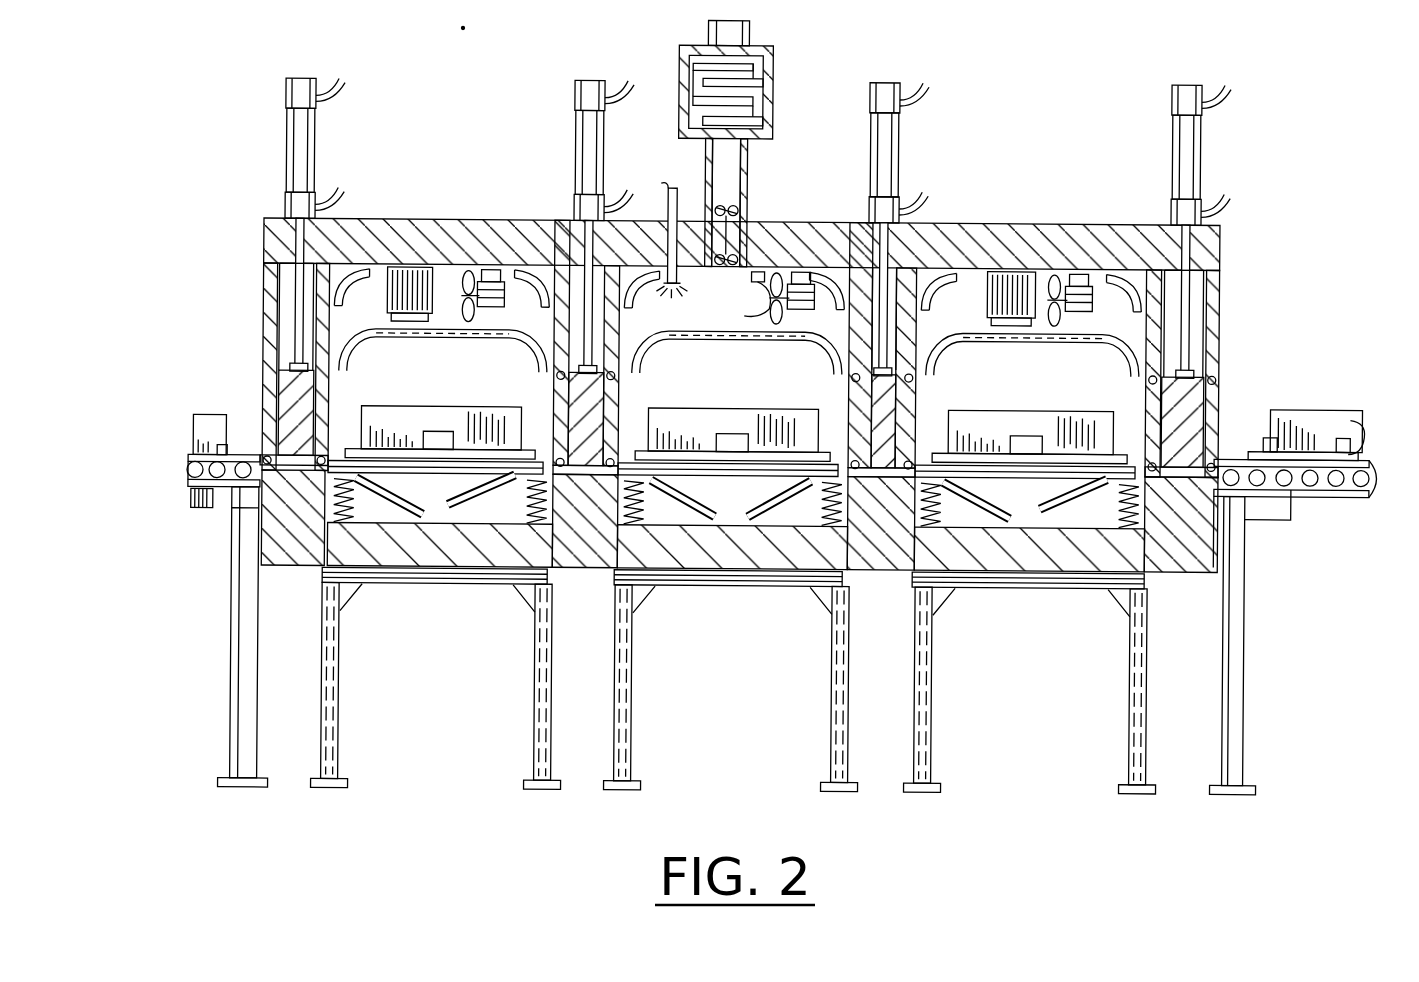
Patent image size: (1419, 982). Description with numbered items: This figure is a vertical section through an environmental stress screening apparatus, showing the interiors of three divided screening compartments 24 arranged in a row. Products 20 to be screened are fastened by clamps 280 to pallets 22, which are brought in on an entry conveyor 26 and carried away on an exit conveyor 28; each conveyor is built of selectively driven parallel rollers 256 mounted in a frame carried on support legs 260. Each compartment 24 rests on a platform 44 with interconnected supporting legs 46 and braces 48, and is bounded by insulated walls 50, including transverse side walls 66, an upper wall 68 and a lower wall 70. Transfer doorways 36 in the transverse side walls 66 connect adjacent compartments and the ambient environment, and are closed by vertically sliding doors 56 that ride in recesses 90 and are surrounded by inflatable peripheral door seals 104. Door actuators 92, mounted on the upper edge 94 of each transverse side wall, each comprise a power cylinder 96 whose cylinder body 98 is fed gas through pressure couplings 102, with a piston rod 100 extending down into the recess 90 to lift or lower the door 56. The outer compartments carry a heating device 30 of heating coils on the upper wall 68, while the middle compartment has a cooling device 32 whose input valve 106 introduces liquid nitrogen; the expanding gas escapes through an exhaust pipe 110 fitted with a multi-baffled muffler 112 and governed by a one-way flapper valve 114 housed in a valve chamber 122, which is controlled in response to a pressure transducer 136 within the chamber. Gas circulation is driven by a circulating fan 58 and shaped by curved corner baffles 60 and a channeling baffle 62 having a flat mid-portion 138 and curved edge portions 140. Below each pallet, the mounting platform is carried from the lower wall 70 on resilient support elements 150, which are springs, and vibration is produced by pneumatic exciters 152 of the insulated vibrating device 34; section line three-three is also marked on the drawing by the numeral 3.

The section line 3- 3 is at (725, 202).
The product 20 is at (404, 402).
The pallet 22 is at (492, 438).
The divided screening compartment 24 is at (419, 369).
The entry conveyor 26 is at (1370, 500).
The exit conveyor 28 is at (193, 448).
The heating device 30 is at (440, 285).
The cooling device 32 is at (664, 185).
The vibrating device 34 is at (438, 573).
The transfer doorway 36 is at (280, 382).
The platform 44 is at (1075, 595).
The supporting leg 46 is at (933, 735).
The brace 48 is at (949, 603).
The insulated wall 50 is at (1227, 243).
The sliding door 56 is at (281, 414).
The circulating fan 58 is at (1057, 275).
The corner baffle 60 is at (353, 327).
The channeling baffle 62 is at (386, 262).
The transverse side wall 66 is at (266, 322).
The upper wall 68 is at (930, 262).
The lower wall 70 is at (737, 585).
The recess 90 is at (300, 275).
The door actuator 92 is at (761, 136).
The upper edge 94 is at (266, 218).
The power cylinder 96 is at (1206, 139).
The cylinder body 98 is at (1206, 188).
The piston rod 100 is at (302, 318).
The pressure coupling 102 is at (1208, 88).
The peripheral door seal 104 is at (310, 478).
The input valve 106 is at (668, 235).
The exhaust pipe 110 is at (748, 28).
The multi-baffled muffler 112 is at (773, 80).
The one-way flapper valve 114 is at (704, 255).
The valve chamber 122 is at (745, 228).
The pressure transducer 136 is at (760, 283).
The flat mid-portion 138 is at (449, 327).
The curved edge portion 140 is at (545, 345).
The resilient support element 150 is at (505, 512).
The exciter 152 is at (700, 515).
The roller 256 is at (205, 468).
The support leg 260 is at (234, 587).
The clamp 280 is at (1365, 440).